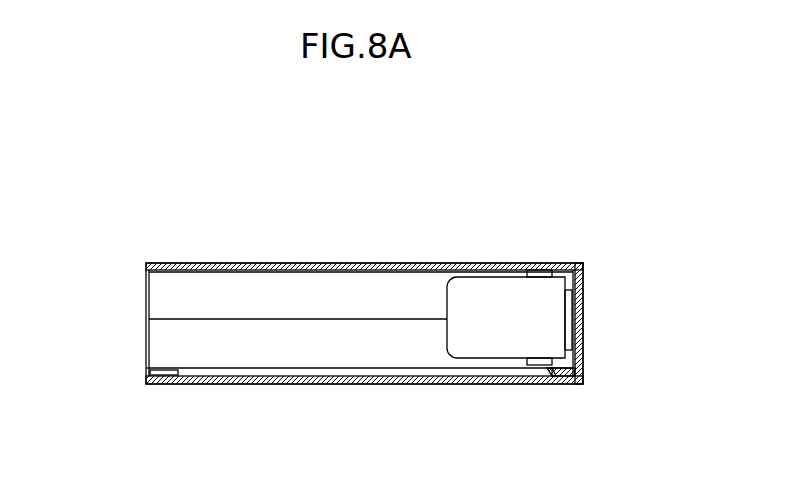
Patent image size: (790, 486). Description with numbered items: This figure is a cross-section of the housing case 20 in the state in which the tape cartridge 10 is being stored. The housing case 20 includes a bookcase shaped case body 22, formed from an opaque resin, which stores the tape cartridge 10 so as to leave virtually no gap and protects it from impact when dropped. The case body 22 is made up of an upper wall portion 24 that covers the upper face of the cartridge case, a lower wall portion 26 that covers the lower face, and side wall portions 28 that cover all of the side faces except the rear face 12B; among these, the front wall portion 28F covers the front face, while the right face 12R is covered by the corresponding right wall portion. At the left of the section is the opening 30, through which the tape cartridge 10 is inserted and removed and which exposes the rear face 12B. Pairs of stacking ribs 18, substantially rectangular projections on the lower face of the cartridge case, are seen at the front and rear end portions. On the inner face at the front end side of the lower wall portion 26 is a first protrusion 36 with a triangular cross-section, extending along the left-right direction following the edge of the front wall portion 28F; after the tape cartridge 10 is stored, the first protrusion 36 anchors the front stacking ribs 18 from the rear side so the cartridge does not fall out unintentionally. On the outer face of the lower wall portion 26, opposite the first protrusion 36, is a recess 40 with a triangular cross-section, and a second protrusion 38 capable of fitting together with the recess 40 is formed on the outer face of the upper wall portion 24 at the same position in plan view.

The housing case 20 is at (440, 198).
The case body 22 is at (585, 272).
The upper wall portion 24 is at (345, 263).
The lower wall portion 26 is at (250, 384).
The tape cartridge 10 is at (146, 347).
The rear face 12B is at (146, 305).
The right face 12R is at (335, 345).
The opening 30 is at (146, 372).
The stacking ribs 18 is at (163, 376).
The front wall portion 28F is at (583, 323).
The side wall portions 28 is at (509, 317).
The second protrusion 38 is at (551, 263).
The recess 40 is at (552, 384).
The first protrusion 36 is at (553, 370).